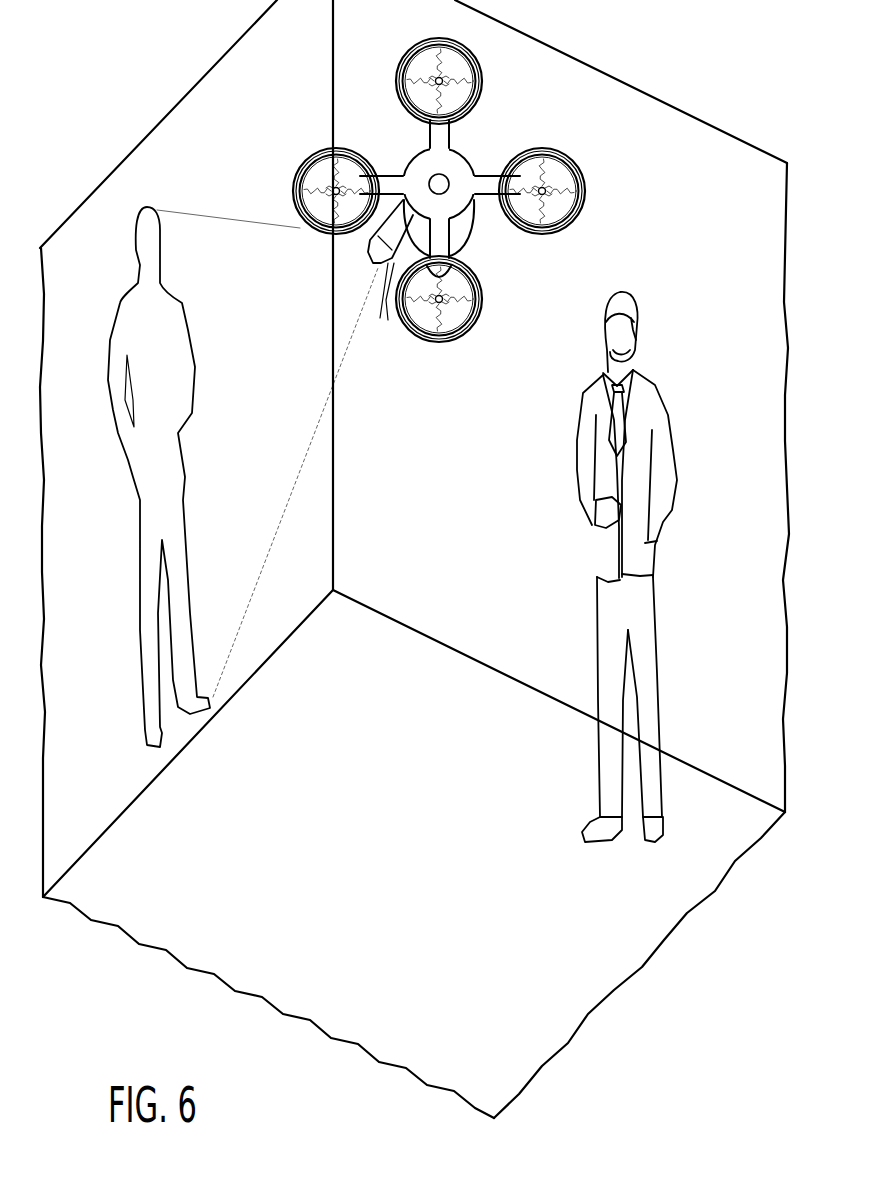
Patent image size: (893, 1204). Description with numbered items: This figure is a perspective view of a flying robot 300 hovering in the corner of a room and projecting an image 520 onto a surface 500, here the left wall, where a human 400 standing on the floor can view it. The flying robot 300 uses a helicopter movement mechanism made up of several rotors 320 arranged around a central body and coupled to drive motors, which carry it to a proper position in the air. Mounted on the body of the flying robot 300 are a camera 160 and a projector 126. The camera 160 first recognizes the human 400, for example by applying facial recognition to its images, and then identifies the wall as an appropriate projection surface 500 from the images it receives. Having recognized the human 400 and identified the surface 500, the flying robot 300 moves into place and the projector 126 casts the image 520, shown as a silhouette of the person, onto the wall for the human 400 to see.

The surface 500 is at (200, 116).
The flying robot 300 is at (470, 182).
The rotor 320 is at (585, 193).
The camera 160 is at (474, 250).
The projector 126 is at (389, 282).
The human 400 is at (668, 370).
The image 520 is at (205, 405).